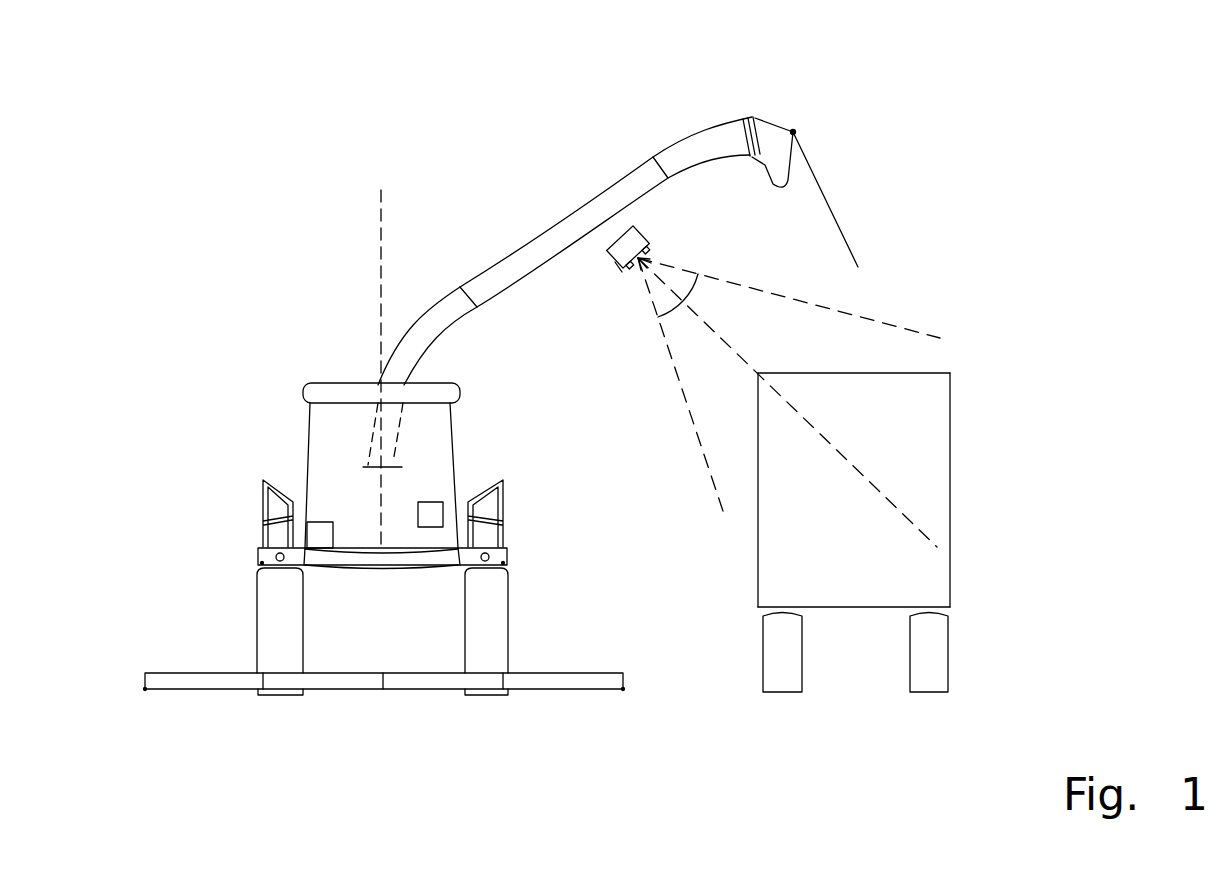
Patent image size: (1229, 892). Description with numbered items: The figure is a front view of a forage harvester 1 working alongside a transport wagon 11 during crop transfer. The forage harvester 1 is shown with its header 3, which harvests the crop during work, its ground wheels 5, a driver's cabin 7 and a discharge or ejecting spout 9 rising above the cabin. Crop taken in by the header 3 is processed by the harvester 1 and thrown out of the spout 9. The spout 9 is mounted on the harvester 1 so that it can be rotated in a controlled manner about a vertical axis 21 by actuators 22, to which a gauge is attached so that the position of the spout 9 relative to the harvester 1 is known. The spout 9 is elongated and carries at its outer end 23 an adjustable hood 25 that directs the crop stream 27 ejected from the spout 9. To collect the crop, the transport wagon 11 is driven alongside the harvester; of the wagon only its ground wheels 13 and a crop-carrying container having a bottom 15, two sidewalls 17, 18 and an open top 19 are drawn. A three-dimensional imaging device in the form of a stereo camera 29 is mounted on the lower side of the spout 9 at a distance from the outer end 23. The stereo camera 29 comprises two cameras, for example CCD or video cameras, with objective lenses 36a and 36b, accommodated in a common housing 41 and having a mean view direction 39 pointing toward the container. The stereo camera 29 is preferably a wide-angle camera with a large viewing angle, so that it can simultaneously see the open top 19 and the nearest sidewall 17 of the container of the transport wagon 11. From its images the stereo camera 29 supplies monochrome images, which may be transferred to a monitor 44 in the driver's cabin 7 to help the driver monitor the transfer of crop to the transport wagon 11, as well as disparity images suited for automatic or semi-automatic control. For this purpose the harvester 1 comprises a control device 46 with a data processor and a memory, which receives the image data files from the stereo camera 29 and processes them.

The forage harvester 1 is at (285, 229).
The header 3 is at (163, 645).
The ground wheels 5 is at (493, 628).
The driver's cabin 7 is at (337, 390).
The discharge spout 9 is at (682, 150).
The transport wagon 11 is at (918, 340).
The ground wheels 13 is at (930, 655).
The bottom 15 is at (815, 605).
The sidewall 17 is at (757, 537).
The sidewall 18 is at (950, 460).
The open top 19 is at (800, 373).
The vertical axis 21 is at (380, 243).
The actuators 22 is at (376, 460).
The outer end 23 is at (782, 100).
The adjustable hood 25 is at (792, 155).
The crop stream 27 is at (838, 213).
The stereo camera 29 is at (590, 238).
The objective lens 36a is at (626, 272).
The objective lens 36b is at (655, 250).
The mean view direction 39 is at (830, 440).
The common housing 41 is at (613, 270).
The monitor 44 is at (432, 502).
The control device 46 is at (313, 522).